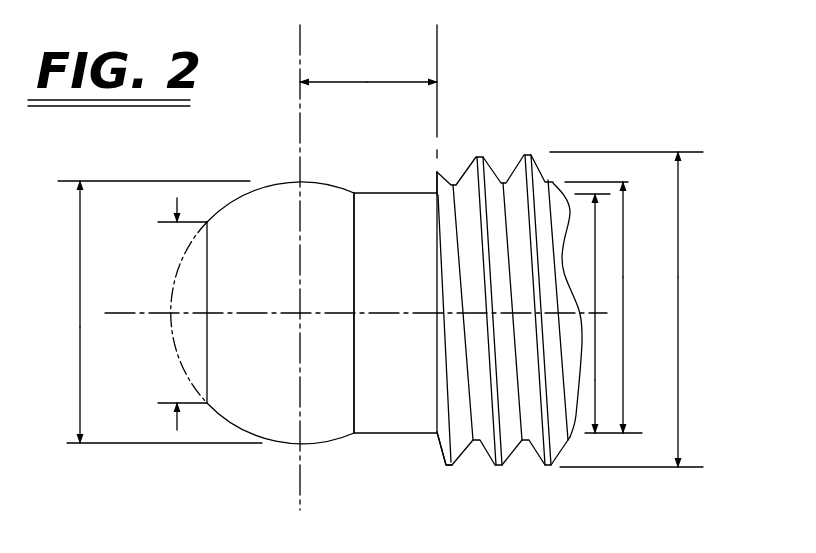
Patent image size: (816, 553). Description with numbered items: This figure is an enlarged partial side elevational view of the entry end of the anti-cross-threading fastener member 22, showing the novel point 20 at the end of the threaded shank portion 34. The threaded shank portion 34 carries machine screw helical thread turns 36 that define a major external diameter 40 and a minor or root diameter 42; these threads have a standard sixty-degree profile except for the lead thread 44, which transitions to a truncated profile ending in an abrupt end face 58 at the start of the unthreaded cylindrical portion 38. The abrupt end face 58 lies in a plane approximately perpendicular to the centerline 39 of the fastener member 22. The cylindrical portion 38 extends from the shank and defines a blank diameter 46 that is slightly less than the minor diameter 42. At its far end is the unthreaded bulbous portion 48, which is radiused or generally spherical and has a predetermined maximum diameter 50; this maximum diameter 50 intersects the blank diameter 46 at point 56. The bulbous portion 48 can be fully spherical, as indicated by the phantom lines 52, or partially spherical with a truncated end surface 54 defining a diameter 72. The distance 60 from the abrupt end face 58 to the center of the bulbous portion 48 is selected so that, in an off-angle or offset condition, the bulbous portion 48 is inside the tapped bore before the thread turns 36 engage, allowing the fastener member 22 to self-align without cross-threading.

The point 20 is at (343, 304).
The fastener member 22 is at (505, 304).
The threaded shank portion 34 is at (506, 427).
The thread turns 36 is at (527, 155).
The unthreaded cylindrical portion 38 is at (397, 203).
The centerline 39 is at (150, 310).
The major external diameter 40 is at (678, 277).
The minor or root diameter 42 is at (623, 277).
The lead thread 44 is at (460, 453).
The blank diameter 46 is at (597, 380).
The unthreaded bulbous portion 48 is at (229, 336).
The maximum diameter 50 is at (80, 327).
The phantom lines 52 is at (170, 332).
The truncated end surface 54 is at (207, 347).
The point 56 is at (354, 193).
The abrupt end face 58 is at (437, 178).
The distance 60 is at (367, 80).
The diameter 72 is at (175, 204).